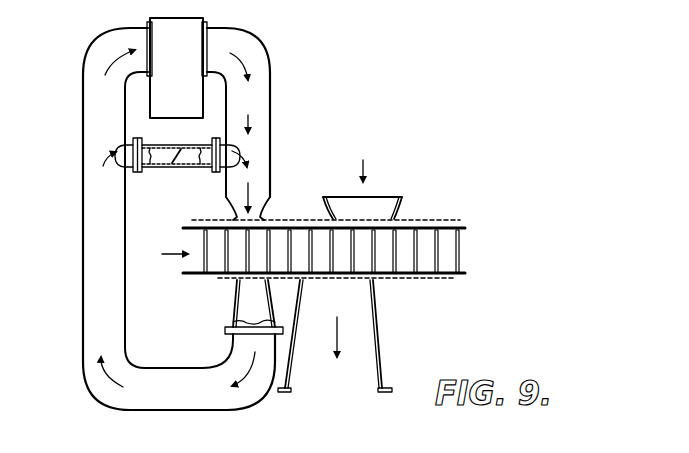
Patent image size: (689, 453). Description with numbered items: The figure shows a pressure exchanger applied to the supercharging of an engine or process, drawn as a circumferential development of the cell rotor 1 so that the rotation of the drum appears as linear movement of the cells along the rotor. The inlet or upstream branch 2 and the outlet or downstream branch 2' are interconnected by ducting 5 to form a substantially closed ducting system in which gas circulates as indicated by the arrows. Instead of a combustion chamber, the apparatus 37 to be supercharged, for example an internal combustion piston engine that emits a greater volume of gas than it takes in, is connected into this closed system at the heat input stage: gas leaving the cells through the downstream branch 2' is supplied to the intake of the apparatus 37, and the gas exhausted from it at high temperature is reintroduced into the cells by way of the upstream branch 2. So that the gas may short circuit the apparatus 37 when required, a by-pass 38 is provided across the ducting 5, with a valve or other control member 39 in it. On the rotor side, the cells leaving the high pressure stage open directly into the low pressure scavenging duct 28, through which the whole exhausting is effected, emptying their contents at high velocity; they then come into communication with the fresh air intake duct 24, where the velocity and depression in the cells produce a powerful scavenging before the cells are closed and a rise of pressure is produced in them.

The ducting 5 is at (95, 190).
The apparatus to be supercharged 37 is at (182, 83).
The by-pass 38 is at (158, 168).
The valve or control member 39 is at (180, 168).
The upstream branch 2 is at (257, 201).
The cell rotor 1 is at (215, 265).
The fresh air intake duct 24 is at (383, 221).
The downstream branch 2' is at (233, 307).
The low pressure scavenging duct 28 is at (362, 360).